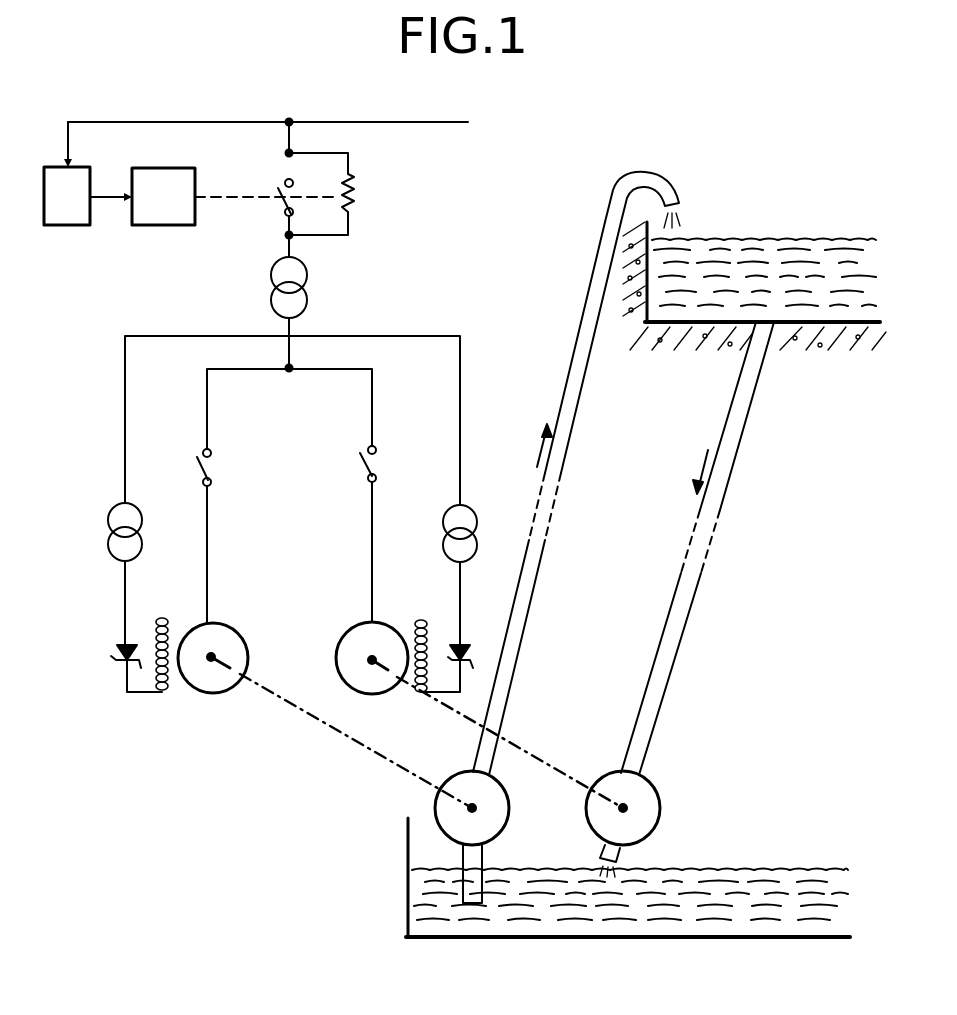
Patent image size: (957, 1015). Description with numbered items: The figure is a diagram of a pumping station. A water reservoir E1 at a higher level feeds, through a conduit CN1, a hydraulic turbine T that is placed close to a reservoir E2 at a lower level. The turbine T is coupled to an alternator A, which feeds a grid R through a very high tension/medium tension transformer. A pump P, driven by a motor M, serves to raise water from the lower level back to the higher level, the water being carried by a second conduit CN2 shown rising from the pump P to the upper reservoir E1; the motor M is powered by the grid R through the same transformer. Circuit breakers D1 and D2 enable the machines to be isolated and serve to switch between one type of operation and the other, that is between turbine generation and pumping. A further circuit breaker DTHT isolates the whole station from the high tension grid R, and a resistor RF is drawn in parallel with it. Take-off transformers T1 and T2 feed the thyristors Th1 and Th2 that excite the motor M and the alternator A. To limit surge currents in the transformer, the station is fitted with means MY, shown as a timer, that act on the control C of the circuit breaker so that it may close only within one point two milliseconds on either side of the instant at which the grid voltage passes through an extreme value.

The grid R is at (137, 122).
The means acting on the control of the circuit breaker MY is at (77, 226).
The control of the circuit breaker C is at (175, 226).
The circuit breaker DTHT is at (283, 201).
The closing resistor RF is at (358, 194).
The circuit breaker D1 is at (199, 468).
The circuit breaker D2 is at (363, 468).
The take-off transformer T1 is at (138, 550).
The take-off transformer T2 is at (452, 552).
The thyristor of motor branch Th1 is at (120, 643).
The thyristor of alternator branch Th2 is at (470, 647).
The motor M is at (235, 637).
The alternator A is at (343, 643).
The pump P is at (452, 775).
The hydraulic turbine T is at (650, 792).
The conduit CN1 is at (737, 437).
The upstream conduit (pumping pipe) CN2 is at (565, 437).
The water reservoir at a higher level E1 is at (757, 257).
The reservoir at a lower level E2 is at (747, 887).